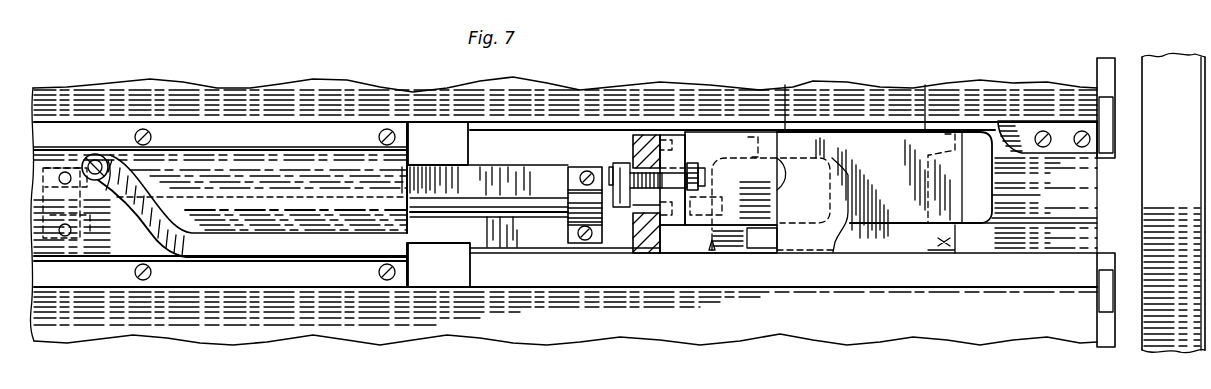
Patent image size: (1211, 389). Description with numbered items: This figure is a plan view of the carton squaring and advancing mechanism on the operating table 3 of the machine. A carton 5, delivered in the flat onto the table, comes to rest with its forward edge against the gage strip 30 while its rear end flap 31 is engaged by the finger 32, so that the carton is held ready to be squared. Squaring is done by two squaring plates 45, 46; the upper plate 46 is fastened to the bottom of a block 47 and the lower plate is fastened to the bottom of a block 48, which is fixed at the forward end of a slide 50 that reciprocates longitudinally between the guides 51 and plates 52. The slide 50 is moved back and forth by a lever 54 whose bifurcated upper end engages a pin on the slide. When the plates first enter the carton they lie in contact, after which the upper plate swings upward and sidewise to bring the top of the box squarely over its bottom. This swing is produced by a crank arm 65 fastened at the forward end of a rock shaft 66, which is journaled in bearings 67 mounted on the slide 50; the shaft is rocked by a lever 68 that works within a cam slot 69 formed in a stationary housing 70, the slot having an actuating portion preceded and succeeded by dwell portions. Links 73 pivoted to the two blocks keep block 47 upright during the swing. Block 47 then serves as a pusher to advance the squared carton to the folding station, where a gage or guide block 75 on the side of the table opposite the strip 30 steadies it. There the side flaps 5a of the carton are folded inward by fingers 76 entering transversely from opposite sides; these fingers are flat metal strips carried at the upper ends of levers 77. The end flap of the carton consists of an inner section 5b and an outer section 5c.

The operating table 3 is at (1010, 95).
The carton 5 is at (848, 132).
The side flaps 5a is at (945, 134).
The inner section of end flap 5b is at (985, 200).
The outer section of end flap 5c is at (985, 178).
The gage strip 30 is at (1057, 280).
The rear end flap 31 is at (712, 250).
The finger 32 is at (720, 198).
The squaring plate 45 is at (720, 140).
The upper squaring plate 46 is at (680, 242).
The block 47 is at (678, 138).
The block 48 is at (650, 214).
The slide 50 is at (518, 166).
The guides 51 is at (172, 88).
The plates 52 is at (259, 130).
The lever 54 is at (434, 140).
The crank arm 65 is at (620, 170).
The rock shaft 66 is at (482, 204).
The bearings 67 is at (88, 215).
The lever 68 is at (96, 156).
The cam slot 69 is at (147, 184).
The stationary housing 70 is at (326, 163).
The links 73 is at (640, 135).
The gage or guide block 75 is at (1063, 138).
The fingers 76 is at (1118, 127).
The levers 77 is at (1106, 60).